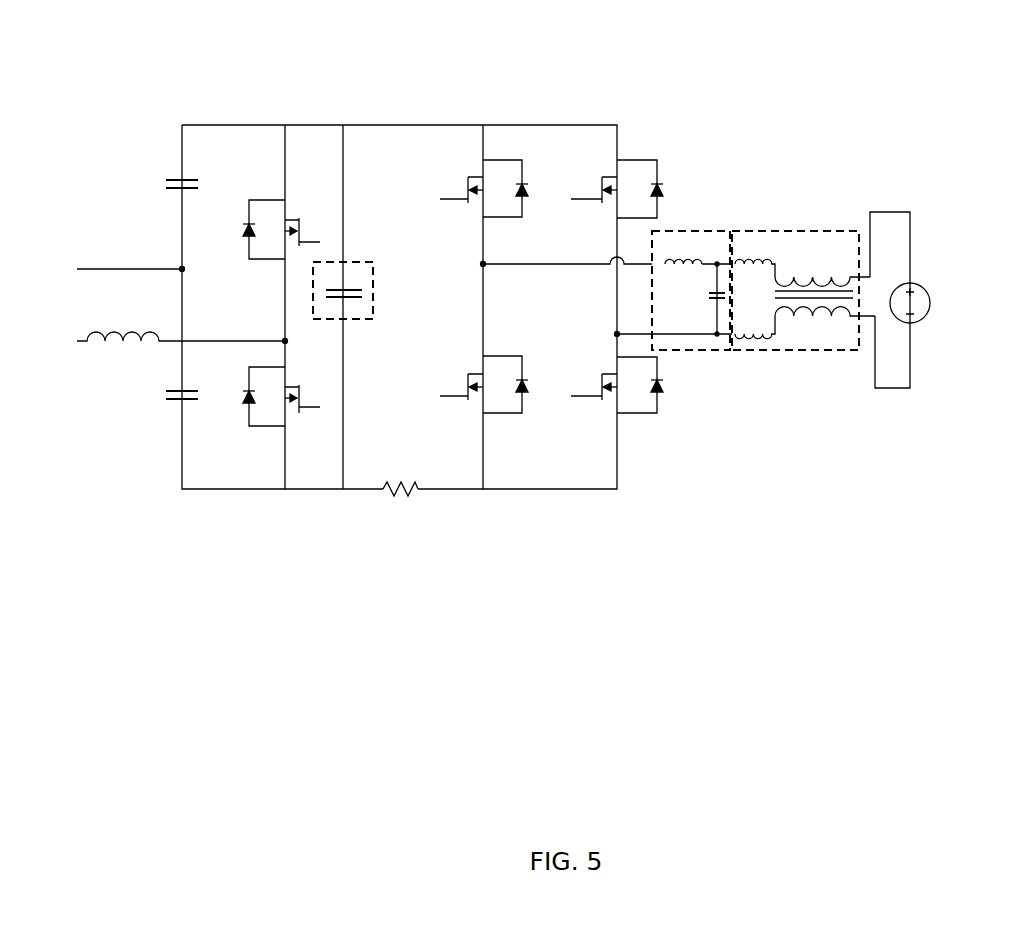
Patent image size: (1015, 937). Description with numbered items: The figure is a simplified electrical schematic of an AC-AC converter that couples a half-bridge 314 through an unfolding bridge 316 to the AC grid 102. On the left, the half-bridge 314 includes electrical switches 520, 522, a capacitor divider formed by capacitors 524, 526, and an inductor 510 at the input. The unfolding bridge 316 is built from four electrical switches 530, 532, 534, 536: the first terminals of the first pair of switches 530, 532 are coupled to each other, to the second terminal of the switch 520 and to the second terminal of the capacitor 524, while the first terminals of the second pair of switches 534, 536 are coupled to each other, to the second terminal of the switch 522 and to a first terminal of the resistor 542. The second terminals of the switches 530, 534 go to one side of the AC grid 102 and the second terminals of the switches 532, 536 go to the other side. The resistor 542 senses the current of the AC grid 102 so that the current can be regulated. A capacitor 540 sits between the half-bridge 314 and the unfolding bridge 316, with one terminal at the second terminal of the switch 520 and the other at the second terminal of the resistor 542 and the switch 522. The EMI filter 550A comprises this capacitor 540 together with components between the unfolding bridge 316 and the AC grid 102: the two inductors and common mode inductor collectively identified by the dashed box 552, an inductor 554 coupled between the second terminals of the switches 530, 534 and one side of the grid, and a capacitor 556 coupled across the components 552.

The AC grid 102 is at (923, 288).
The half-bridge 314 is at (273, 114).
The unfolding bridge 316 is at (540, 113).
The inductor 510 is at (102, 335).
The electrical switch 520 is at (281, 227).
The electrical switch 522 is at (281, 394).
The capacitor 524 is at (190, 171).
The capacitor 526 is at (191, 385).
The electrical switch 530 is at (484, 186).
The electrical switch 532 is at (617, 186).
The electrical switch 534 is at (484, 381).
The electrical switch 536 is at (617, 381).
The capacitor 540 is at (343, 290).
The resistor 542 is at (400, 475).
The EMI filter 550A is at (787, 350).
The dashed box 552 is at (845, 231).
The inductor 554 is at (683, 250).
The capacitor 556 is at (701, 299).